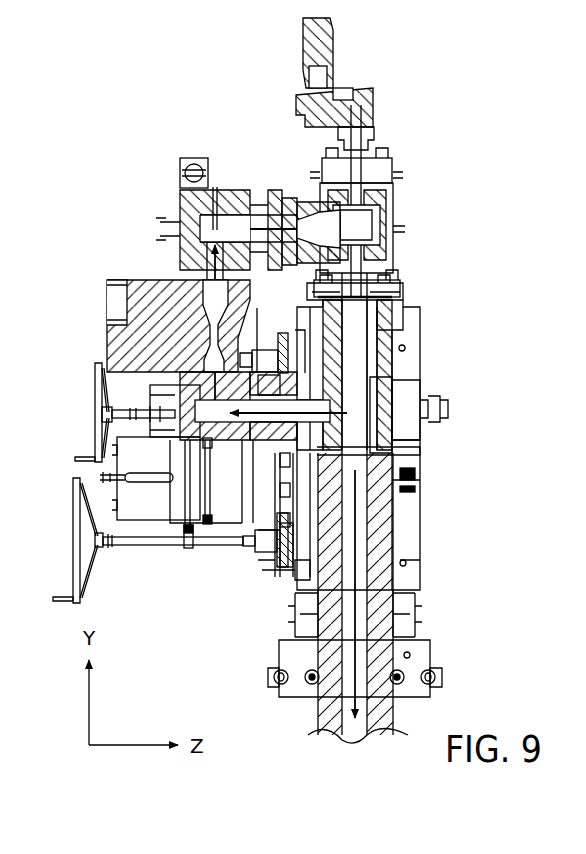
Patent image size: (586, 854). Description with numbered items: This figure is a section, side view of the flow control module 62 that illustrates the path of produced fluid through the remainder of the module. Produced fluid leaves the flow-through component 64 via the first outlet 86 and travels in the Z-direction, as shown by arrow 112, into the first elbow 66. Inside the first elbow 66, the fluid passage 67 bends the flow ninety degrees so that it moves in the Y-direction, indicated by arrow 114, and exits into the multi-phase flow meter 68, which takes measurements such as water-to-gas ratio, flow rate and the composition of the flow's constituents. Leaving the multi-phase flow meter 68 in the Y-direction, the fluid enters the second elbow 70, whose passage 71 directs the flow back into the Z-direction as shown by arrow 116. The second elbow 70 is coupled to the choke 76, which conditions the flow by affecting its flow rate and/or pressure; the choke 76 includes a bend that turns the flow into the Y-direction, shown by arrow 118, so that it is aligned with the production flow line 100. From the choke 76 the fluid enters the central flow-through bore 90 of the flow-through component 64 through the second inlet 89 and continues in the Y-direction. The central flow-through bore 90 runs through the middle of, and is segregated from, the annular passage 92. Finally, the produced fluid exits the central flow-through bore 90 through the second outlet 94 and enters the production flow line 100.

The flow control module 62 is at (113, 150).
The flow-through component 64 is at (388, 393).
The first elbow 66 is at (190, 448).
The fluid passage 67 is at (225, 448).
The multi-phase flow meter 68 is at (107, 341).
The second elbow 70 is at (190, 212).
The passage 71 is at (206, 236).
The choke 76 is at (386, 216).
The first outlet 86 is at (293, 375).
The second inlet 89 is at (362, 295).
The central flow-through bore 90 is at (358, 365).
The annular passage 92 is at (378, 423).
The second outlet 94 is at (360, 462).
The production flow line 100 is at (318, 714).
The arrow 112 is at (292, 575).
The arrow 114 is at (178, 290).
The arrow 116 is at (253, 218).
The arrow 118 is at (360, 311).